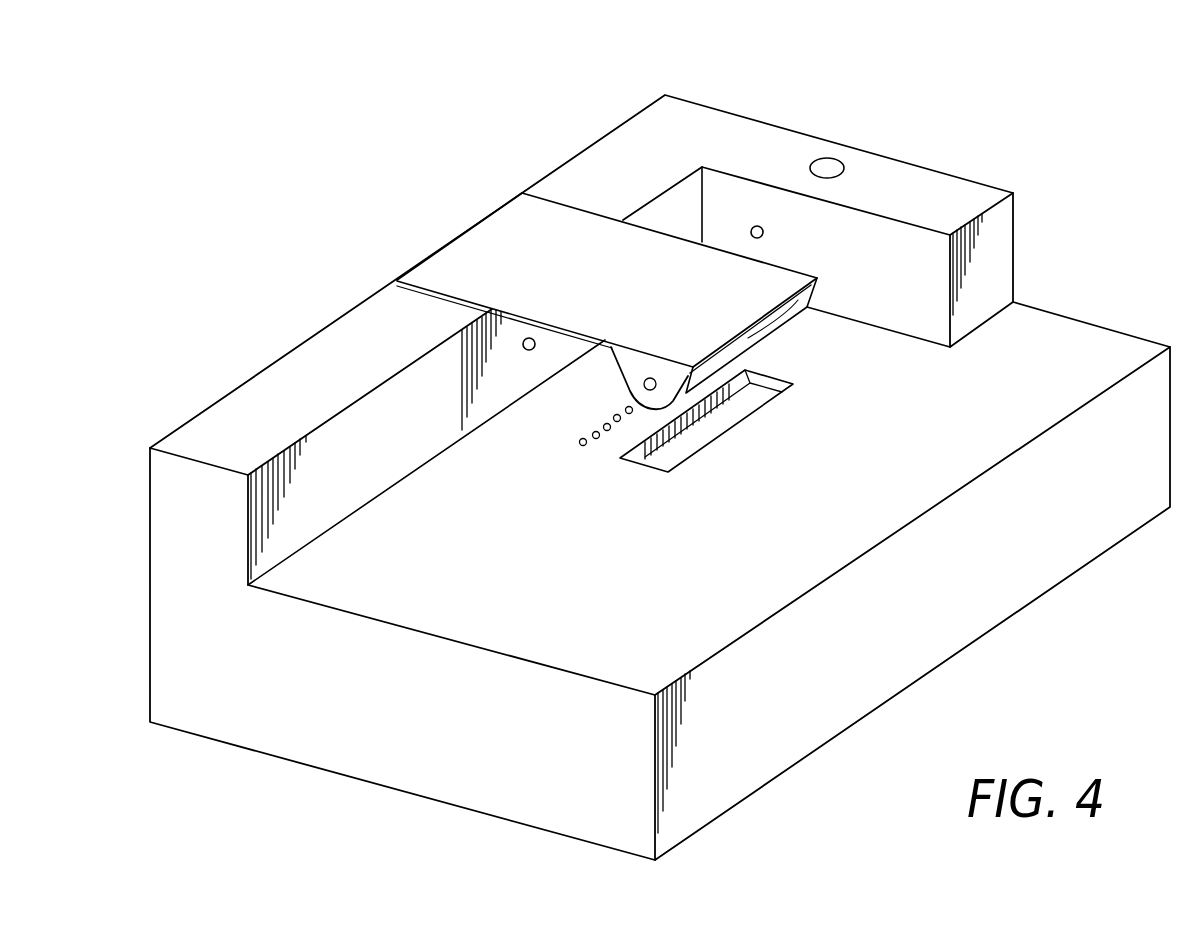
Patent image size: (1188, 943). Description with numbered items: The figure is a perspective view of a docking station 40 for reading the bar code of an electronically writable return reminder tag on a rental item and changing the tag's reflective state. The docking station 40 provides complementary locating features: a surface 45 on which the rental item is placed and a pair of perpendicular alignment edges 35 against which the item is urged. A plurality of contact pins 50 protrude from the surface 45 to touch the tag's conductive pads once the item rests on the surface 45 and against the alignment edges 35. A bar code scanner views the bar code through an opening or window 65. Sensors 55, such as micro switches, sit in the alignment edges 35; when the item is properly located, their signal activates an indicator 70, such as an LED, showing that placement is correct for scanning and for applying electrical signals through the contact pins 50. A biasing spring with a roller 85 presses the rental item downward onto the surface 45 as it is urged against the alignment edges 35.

The docking station 40 is at (540, 130).
The surface 45 is at (1083, 348).
The alignment edges 35 is at (655, 208).
The biasing spring with a roller 85 is at (480, 237).
The indicator 70 is at (828, 158).
The sensors 55 is at (757, 226).
The contact pins 50 is at (596, 441).
The opening or window 65 is at (732, 417).